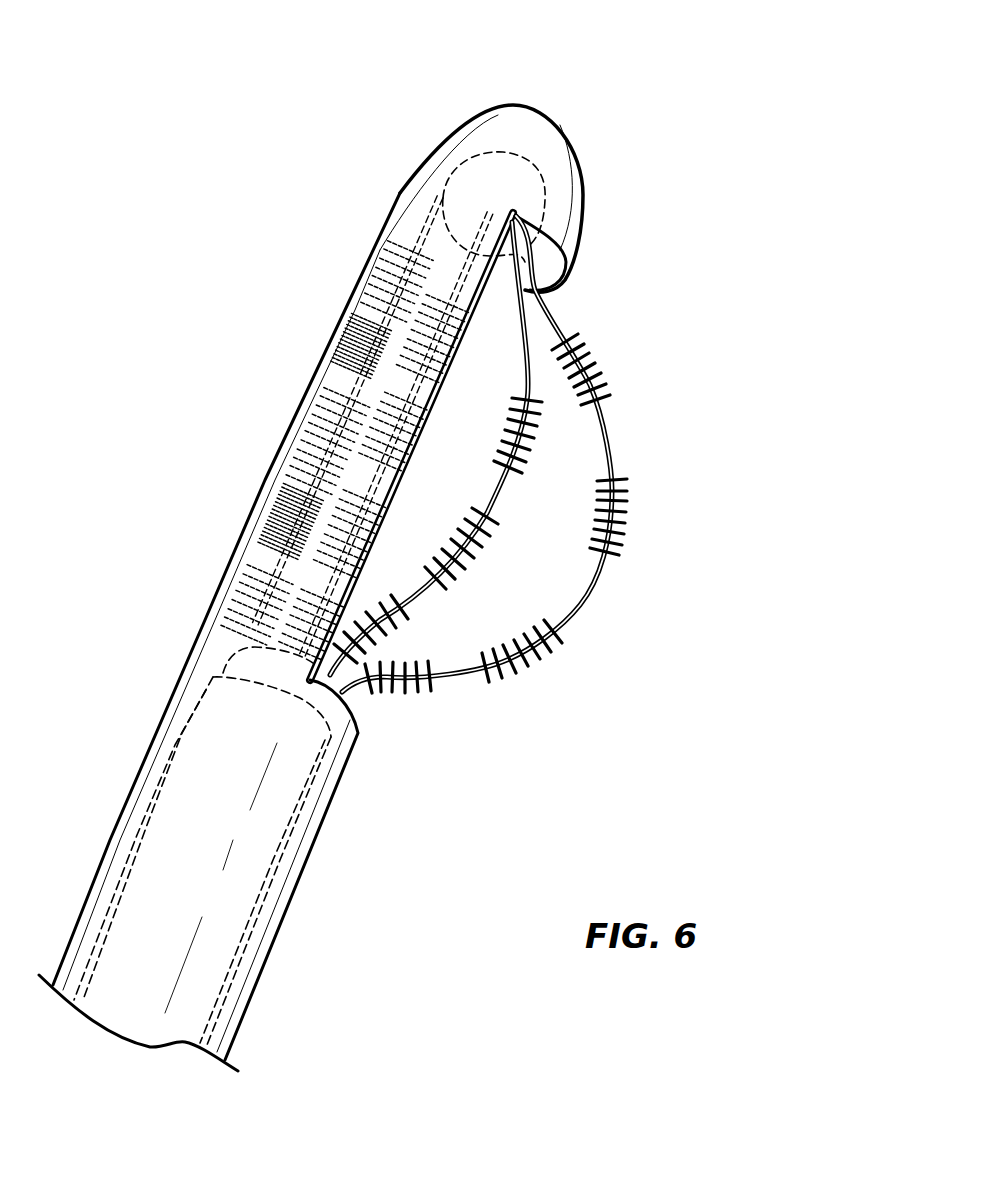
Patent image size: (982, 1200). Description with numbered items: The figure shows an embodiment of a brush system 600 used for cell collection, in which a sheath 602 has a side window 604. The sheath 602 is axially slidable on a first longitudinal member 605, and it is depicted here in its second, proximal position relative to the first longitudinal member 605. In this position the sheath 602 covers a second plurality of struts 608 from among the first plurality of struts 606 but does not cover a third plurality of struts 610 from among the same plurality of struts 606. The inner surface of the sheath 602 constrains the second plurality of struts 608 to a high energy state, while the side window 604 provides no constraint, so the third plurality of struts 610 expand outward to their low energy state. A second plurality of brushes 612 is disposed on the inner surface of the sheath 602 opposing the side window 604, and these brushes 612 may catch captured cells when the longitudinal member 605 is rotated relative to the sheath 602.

The brush system 600 is at (163, 208).
The sheath 602 is at (532, 113).
The side window 604 is at (530, 454).
The first longitudinal member 605 is at (258, 927).
The plurality of struts 606 is at (340, 398).
The second plurality of struts 608 is at (413, 252).
The third plurality of struts 610 is at (615, 440).
The second plurality of brushes 612 is at (345, 352).